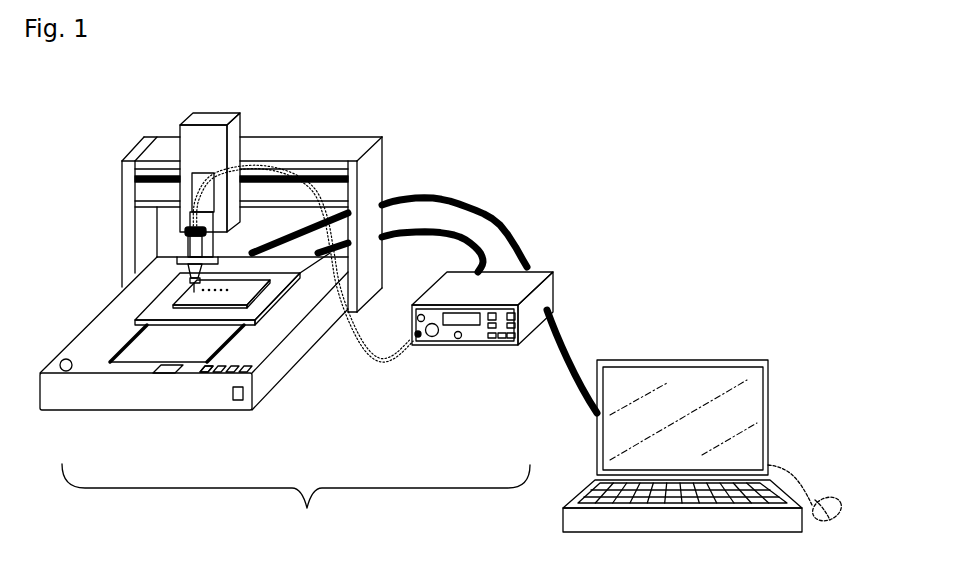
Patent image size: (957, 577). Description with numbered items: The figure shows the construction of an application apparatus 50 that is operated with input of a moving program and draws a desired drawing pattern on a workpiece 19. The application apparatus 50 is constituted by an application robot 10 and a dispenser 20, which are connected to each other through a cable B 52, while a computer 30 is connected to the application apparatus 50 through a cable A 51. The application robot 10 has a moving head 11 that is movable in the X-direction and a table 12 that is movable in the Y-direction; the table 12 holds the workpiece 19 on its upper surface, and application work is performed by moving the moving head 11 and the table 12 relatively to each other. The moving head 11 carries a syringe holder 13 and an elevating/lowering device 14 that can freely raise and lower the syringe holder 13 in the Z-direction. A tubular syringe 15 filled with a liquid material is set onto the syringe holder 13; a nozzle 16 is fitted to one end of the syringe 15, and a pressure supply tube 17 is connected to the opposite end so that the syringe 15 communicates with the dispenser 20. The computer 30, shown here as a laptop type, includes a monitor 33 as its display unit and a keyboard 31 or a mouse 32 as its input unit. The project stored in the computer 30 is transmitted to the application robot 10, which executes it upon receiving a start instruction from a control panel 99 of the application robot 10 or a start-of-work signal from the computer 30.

The application robot 10 is at (248, 276).
The moving head 11 is at (212, 120).
The table 12 is at (153, 312).
The syringe holder 13 is at (207, 243).
The elevating/lowering device 14 is at (197, 188).
The syringe 15 is at (195, 243).
The nozzle 16 is at (186, 289).
The pressure supply tube 17 is at (385, 360).
The workpiece 19 is at (238, 293).
The dispenser 20 is at (569, 253).
The computer 30 is at (718, 423).
The keyboard 31 is at (688, 502).
The mouse 32 is at (835, 510).
The monitor 33 is at (683, 377).
The application apparatus 50 is at (296, 502).
The cable A 51 is at (560, 375).
The cable B 52 is at (453, 237).
The control panel 99 is at (229, 373).